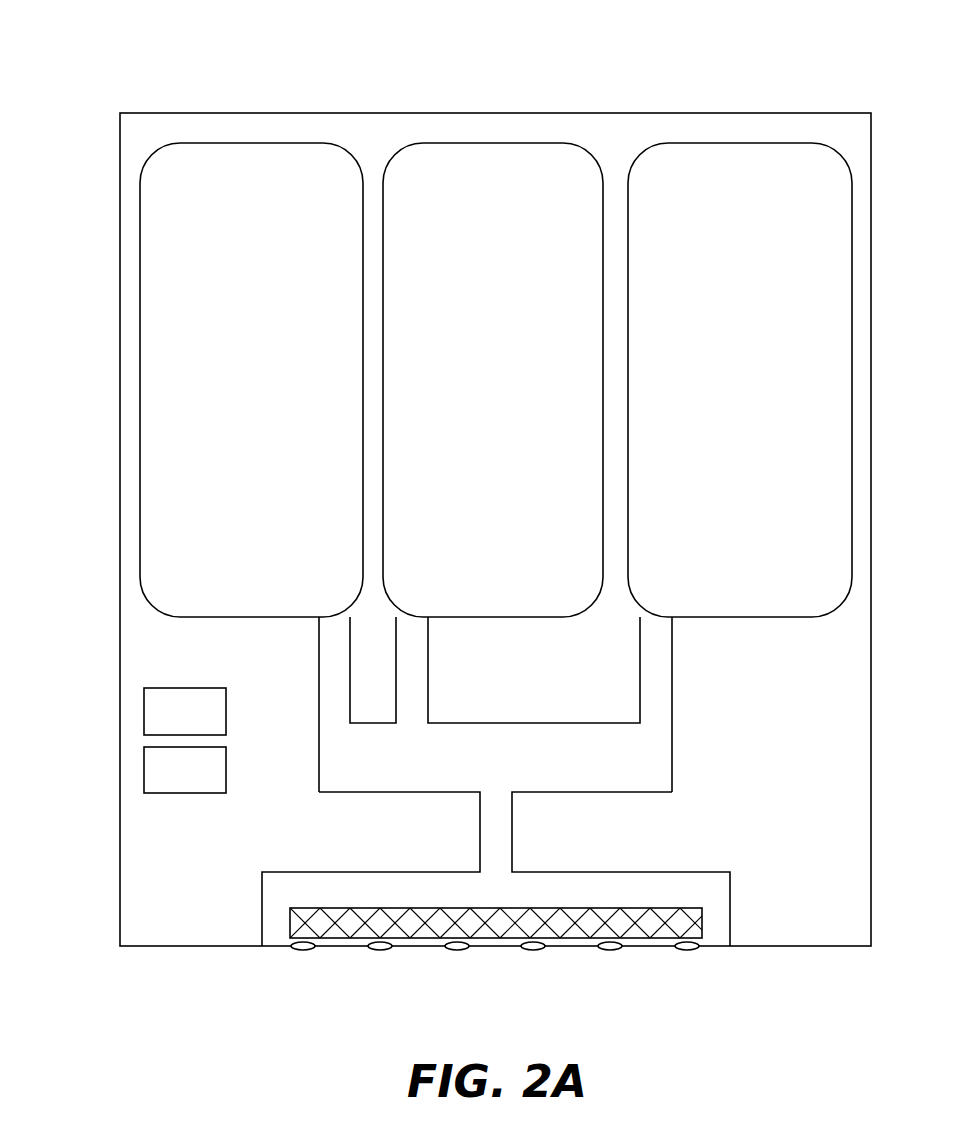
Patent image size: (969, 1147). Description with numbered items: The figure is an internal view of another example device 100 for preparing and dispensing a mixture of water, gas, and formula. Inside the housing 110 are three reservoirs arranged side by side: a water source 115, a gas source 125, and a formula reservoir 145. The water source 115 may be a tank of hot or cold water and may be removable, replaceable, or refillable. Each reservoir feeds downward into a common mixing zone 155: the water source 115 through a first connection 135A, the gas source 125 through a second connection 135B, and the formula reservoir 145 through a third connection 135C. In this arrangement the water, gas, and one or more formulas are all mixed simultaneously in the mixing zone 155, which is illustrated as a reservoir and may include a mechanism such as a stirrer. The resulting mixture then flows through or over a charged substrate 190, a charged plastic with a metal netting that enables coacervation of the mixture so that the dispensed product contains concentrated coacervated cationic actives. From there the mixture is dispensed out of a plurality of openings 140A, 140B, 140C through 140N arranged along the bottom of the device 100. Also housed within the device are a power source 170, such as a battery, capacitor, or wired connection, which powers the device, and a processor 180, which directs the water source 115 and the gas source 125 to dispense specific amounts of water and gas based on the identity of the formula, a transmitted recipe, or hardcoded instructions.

The device 100 is at (98, 80).
The housing 110 is at (207, 113).
The water source 115 is at (251, 380).
The gas source 125 is at (493, 380).
The formula reservoir 145 is at (740, 380).
The first connection 135A is at (319, 655).
The second connection 135B is at (428, 657).
The third connection 135C is at (672, 657).
The mixing zone 155 is at (312, 697).
The power source 170 is at (185, 711).
The processor 180 is at (185, 770).
The charged substrate 190 is at (565, 928).
The opening 140A is at (303, 950).
The opening 140B is at (380, 950).
The opening 140C is at (457, 950).
The opening 140N is at (687, 950).